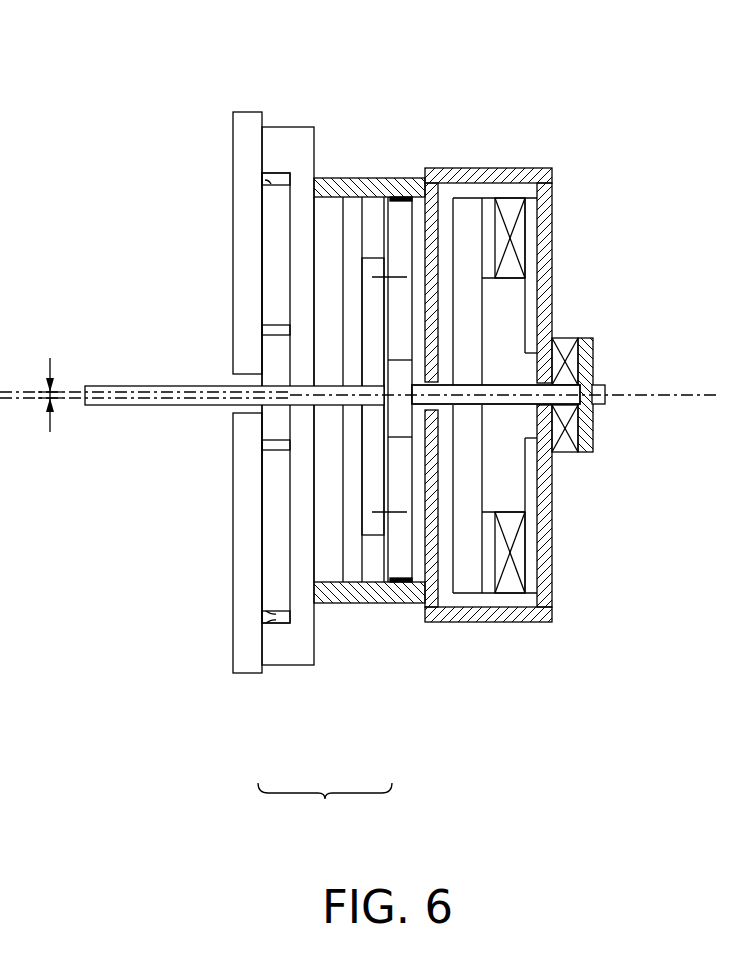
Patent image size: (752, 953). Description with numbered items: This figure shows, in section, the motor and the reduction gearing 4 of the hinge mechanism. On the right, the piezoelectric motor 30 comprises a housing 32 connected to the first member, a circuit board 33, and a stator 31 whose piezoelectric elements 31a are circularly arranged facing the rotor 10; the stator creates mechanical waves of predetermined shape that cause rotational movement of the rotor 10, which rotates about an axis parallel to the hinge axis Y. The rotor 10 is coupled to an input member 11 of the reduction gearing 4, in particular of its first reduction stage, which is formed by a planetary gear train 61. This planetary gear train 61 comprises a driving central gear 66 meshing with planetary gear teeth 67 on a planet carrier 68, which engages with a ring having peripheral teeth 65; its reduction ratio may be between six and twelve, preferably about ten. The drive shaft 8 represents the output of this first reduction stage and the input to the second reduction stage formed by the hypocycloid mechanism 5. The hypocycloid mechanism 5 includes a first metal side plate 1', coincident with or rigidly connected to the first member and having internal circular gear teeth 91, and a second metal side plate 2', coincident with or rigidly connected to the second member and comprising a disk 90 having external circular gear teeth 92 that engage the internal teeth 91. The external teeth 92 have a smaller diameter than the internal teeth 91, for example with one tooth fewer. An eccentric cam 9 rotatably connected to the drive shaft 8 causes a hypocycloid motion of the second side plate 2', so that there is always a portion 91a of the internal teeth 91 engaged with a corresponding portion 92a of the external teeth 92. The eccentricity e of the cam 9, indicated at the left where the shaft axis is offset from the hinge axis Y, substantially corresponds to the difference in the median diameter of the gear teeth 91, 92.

The first side plate 1' is at (282, 399).
The second side plate 2' is at (196, 392).
The reduction gearing 4 is at (325, 812).
The hypocycloid mechanism 5 is at (289, 682).
The drive shaft 8 is at (133, 407).
The eccentric cam 9 is at (275, 417).
The rotor 10 is at (467, 572).
The input member 11 is at (440, 396).
The motor 30 is at (509, 344).
The stator 31 is at (513, 217).
The piezoelectric elements 31a is at (488, 268).
The housing 32 is at (447, 172).
The circuit board 33 is at (532, 328).
The planetary gear train 61 is at (366, 636).
The ring having peripheral teeth 65 is at (403, 197).
The driving central gear 66 is at (407, 428).
The planetary gear teeth 67 is at (405, 207).
The planet carrier 68 is at (372, 490).
The disk 90 is at (272, 467).
The internal circular gear teeth 91 is at (263, 621).
The portion of the internal teeth 91a is at (268, 170).
The external circular gear teeth 92 is at (265, 613).
The portion of the external teeth 92a is at (277, 178).
The eccentricity e is at (38, 395).
The hinge axis Y is at (685, 393).